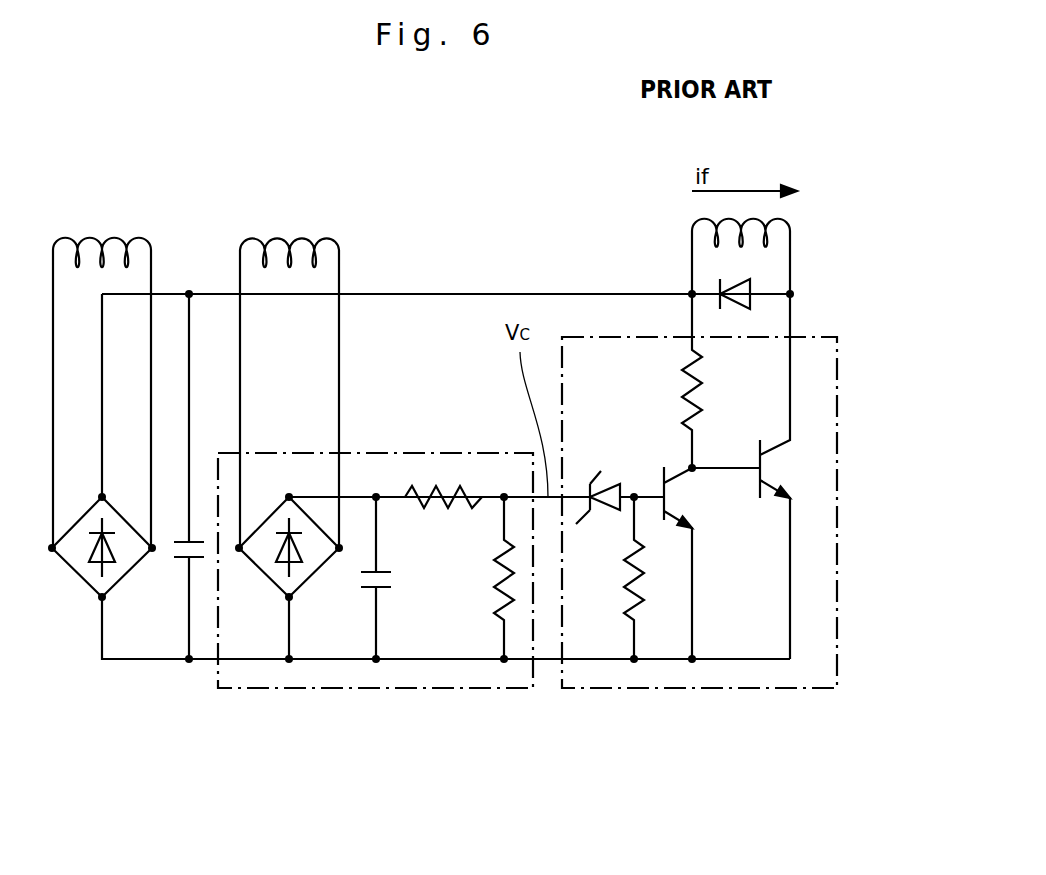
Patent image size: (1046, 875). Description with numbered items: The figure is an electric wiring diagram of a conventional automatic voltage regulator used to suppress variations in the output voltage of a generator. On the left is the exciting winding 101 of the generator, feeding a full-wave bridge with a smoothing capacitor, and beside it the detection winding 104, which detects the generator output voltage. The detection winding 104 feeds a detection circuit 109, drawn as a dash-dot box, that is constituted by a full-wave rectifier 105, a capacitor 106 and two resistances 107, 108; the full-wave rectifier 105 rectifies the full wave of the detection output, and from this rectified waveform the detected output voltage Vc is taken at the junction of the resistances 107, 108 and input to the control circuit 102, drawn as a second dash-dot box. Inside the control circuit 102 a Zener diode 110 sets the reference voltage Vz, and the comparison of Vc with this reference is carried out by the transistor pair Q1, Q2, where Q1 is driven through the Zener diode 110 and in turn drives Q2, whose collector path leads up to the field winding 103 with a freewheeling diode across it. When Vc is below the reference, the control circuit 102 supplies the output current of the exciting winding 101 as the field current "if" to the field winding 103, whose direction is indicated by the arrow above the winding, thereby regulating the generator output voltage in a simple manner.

The exciting winding 101 is at (101, 229).
The control circuit 102 is at (710, 690).
The field winding 103 is at (745, 207).
The detection winding 104 is at (291, 229).
The full-wave rectifier 105 is at (263, 573).
The capacitor 106 is at (357, 625).
The resistance 107 is at (443, 477).
The resistance 108 is at (495, 622).
The detection circuit 109 is at (410, 690).
The zener diode 110 is at (613, 475).
The transistor Q1 is at (703, 502).
The transistor Q2 is at (792, 470).